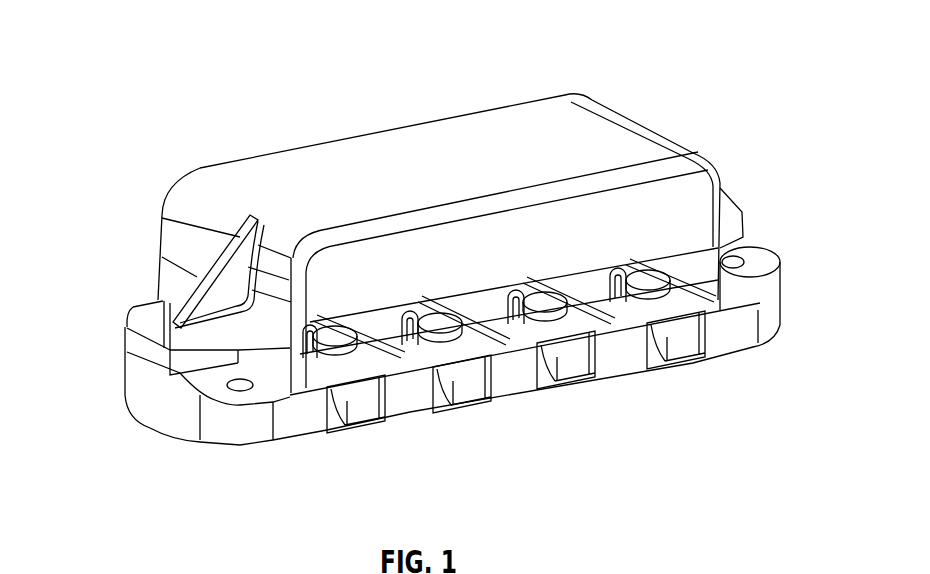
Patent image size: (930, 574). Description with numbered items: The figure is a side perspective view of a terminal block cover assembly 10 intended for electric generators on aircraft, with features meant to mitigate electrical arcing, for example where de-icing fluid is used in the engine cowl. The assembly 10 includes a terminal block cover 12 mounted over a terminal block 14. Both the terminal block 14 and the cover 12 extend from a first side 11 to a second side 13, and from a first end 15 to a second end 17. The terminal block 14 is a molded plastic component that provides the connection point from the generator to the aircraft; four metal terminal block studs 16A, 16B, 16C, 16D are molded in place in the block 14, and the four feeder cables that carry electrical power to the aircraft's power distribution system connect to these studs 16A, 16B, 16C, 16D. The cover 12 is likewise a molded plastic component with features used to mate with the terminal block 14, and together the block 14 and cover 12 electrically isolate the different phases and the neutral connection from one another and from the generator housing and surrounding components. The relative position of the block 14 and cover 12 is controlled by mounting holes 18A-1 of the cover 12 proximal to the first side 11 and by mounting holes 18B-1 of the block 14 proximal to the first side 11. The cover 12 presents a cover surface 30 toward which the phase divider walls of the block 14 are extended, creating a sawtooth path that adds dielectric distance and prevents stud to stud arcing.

The terminal block cover assembly 10 is at (106, 36).
The first side 11 is at (627, 428).
The terminal block cover 12 is at (188, 190).
The second side 13 is at (356, 100).
The terminal block 14 is at (621, 345).
The first end 15 is at (126, 441).
The terminal block stud 16A is at (317, 340).
The terminal block stud 16B is at (432, 316).
The terminal block stud 16C is at (545, 294).
The terminal block stud 16D is at (637, 278).
The second end 17 is at (757, 122).
The mounting hole 18A-1 is at (735, 257).
The mounting hole 18B-1 is at (234, 378).
The cover surface 30 is at (497, 123).